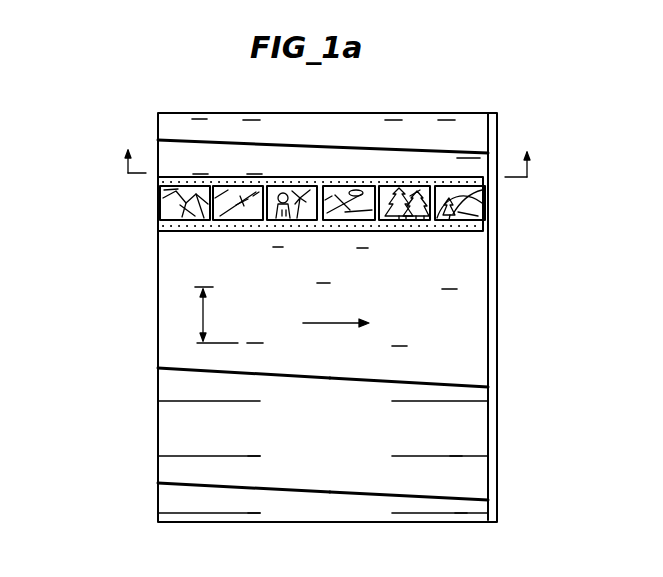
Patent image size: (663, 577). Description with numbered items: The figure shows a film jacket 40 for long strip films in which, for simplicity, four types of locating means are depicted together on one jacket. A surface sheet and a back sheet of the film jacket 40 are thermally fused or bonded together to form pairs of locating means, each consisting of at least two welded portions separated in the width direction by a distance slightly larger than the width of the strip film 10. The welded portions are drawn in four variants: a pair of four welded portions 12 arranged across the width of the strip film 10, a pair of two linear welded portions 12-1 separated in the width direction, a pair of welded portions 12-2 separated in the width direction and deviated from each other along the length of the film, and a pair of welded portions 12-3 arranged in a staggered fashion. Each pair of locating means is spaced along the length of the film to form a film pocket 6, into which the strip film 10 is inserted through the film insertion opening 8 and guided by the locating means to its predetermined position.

The film jacket 40 is at (187, 87).
The welded portions 12 is at (393, 177).
The linear welded portions 12-1 is at (252, 457).
The welded portions 12-2 is at (256, 343).
The welded portions 12-3 is at (252, 174).
The strip film 10 is at (472, 208).
The film pocket 6 is at (172, 387).
The film insertion opening 8 is at (493, 380).